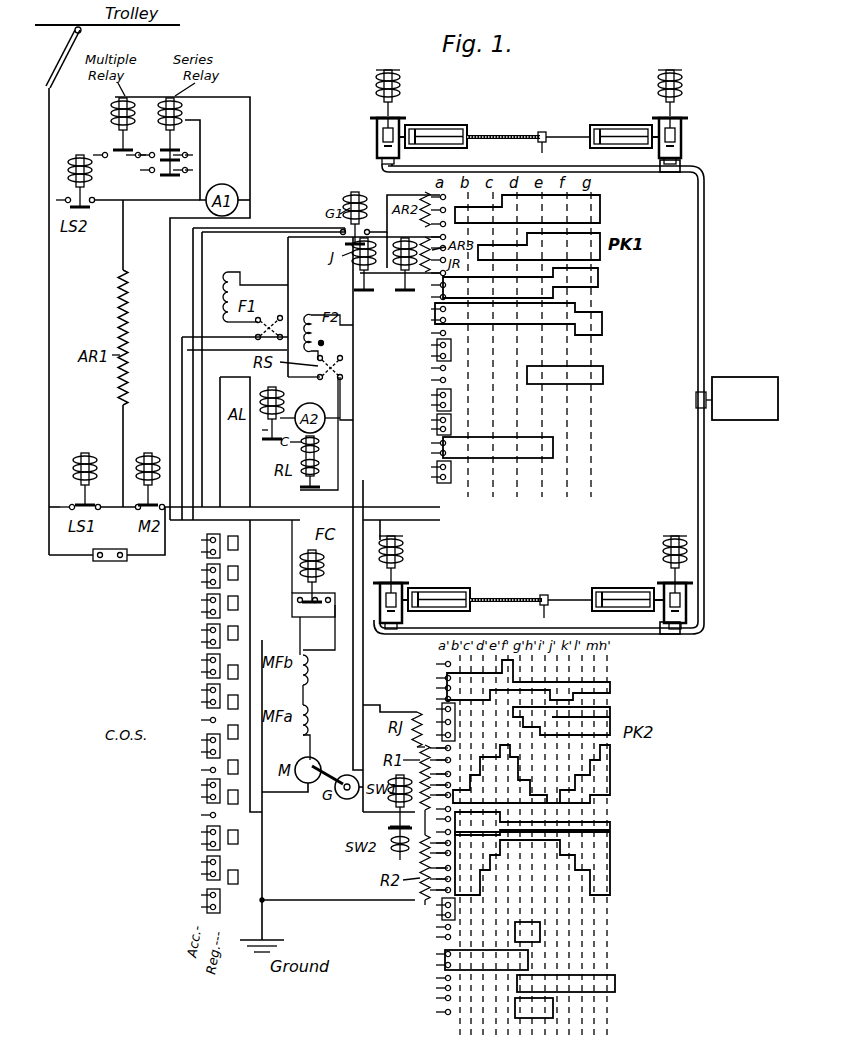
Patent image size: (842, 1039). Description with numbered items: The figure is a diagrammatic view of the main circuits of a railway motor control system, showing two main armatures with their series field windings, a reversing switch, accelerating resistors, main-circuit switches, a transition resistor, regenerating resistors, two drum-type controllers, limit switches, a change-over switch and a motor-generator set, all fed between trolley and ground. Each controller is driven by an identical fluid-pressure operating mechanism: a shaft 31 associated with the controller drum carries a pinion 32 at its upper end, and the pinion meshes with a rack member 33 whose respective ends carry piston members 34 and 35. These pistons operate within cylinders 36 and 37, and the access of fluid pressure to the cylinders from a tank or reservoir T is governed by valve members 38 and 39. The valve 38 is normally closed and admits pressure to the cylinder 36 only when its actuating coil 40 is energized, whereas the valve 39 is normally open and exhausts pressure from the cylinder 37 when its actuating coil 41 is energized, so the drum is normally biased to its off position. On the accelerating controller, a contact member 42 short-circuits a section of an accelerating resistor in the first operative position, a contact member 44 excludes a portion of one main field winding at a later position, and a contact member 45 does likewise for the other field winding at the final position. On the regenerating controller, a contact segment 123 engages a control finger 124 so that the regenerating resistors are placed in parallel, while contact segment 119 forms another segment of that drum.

The shaft 31 is at (542, 150).
The pinion 32 is at (543, 132).
The rack member 33 is at (497, 134).
The piston member 34 is at (436, 125).
The piston member 35 is at (621, 125).
The cylinder 36 is at (452, 120).
The cylinder 37 is at (636, 126).
The valve member 38 is at (378, 135).
The valve member 39 is at (684, 135).
The actuating coil 40 is at (402, 84).
The actuating coil 41 is at (684, 80).
The contact member 42 is at (527, 209).
The contact member 44 is at (578, 288).
The contact member 45 is at (590, 330).
The contact segment 119 is at (606, 687).
The contact segment 123 is at (603, 770).
The control finger 124 is at (455, 818).
The tank or reservoir T is at (737, 398).